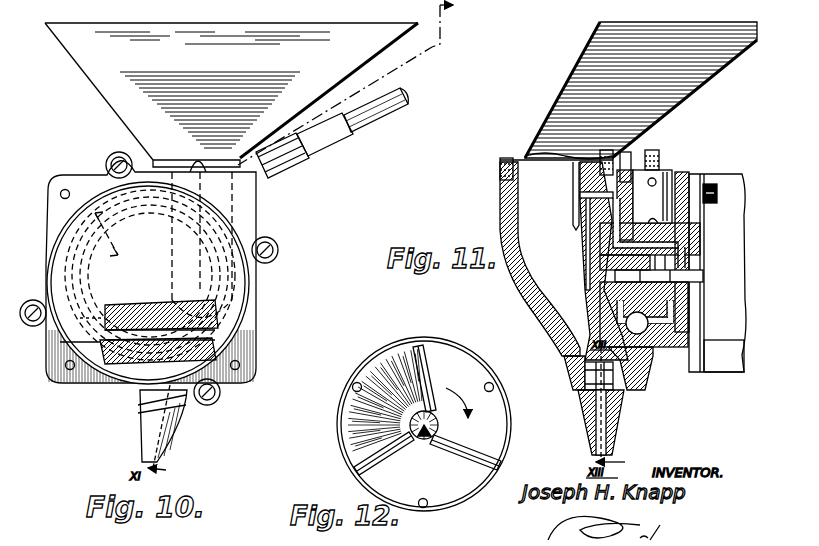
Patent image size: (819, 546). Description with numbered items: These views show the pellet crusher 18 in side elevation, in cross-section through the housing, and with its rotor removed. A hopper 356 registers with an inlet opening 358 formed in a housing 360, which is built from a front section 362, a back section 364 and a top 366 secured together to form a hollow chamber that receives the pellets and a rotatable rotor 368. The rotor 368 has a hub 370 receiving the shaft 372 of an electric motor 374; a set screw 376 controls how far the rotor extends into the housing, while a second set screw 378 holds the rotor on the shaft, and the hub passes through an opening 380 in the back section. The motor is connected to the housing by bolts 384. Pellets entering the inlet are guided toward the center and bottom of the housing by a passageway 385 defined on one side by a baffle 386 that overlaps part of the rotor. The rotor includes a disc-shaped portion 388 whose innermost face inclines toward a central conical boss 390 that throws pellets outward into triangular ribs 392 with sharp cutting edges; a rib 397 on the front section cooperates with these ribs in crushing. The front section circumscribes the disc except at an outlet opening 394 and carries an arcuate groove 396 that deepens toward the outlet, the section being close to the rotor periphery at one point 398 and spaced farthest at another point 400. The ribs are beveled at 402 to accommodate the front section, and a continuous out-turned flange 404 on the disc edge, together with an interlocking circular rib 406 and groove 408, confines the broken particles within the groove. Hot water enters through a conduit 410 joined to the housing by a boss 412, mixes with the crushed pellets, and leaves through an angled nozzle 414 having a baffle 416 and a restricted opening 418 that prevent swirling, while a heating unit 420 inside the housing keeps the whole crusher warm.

In FIG. 10, the crusher 18 is at (163, 236).
In FIG. 11, the crusher 18 is at (549, 183).
In FIG. 10, the hopper 356 is at (272, 33).
In FIG. 11, the hopper 356 is at (708, 55).
In FIG. 11, the inlet opening 358 is at (503, 186).
In FIG. 10, the housing 360 is at (170, 272).
In FIG. 11, the housing 360 is at (600, 328).
In FIG. 10, the front section 362 is at (47, 272).
In FIG. 11, the front section 362 is at (538, 290).
In FIG. 11, the back section 364 is at (640, 338).
In FIG. 11, the top 366 is at (612, 150).
In FIG. 11, the rotor 368 is at (600, 312).
In FIG. 12, the rotor 368 is at (416, 468).
In FIG. 11, the hub 370 is at (690, 290).
In FIG. 11, the shaft 372 is at (690, 279).
In FIG. 11, the electric motor 374 is at (732, 183).
In FIG. 11, the set screw 376 is at (595, 297).
In FIG. 11, the second set screw 378 is at (650, 209).
In FIG. 11, the opening 380 is at (680, 250).
In FIG. 11, the bolts 384 is at (725, 372).
In FIG. 11, the passageway 385 is at (600, 193).
In FIG. 10, the baffle 386 is at (190, 262).
In FIG. 11, the baffle 386 is at (580, 228).
In FIG. 11, the disc-shaped portion 388 is at (682, 174).
In FIG. 12, the disc-shaped portion 388 is at (447, 498).
In FIG. 11, the conical boss 390 is at (580, 262).
In FIG. 12, the conical boss 390 is at (419, 411).
In FIG. 11, the ribs 392 is at (540, 247).
In FIG. 12, the ribs 392 is at (387, 446).
In FIG. 11, the outlet opening 394 is at (583, 366).
In FIG. 10, the groove 396 is at (237, 303).
In FIG. 11, the groove 396 is at (600, 194).
In FIG. 10, the rib 397 is at (149, 319).
In FIG. 10, the point 398 is at (112, 380).
In FIG. 10, the point 400 is at (193, 388).
In FIG. 11, the beveled portion 402 is at (580, 197).
In FIG. 12, the beveled portion 402 is at (423, 347).
In FIG. 11, the out-turned flange 404 is at (633, 168).
In FIG. 12, the out-turned flange 404 is at (447, 348).
In FIG. 11, the circular rib 406 is at (640, 336).
In FIG. 11, the groove 408 is at (600, 244).
In FIG. 10, the conduit 410 is at (379, 128).
In FIG. 10, the boss 412 is at (255, 206).
In FIG. 10, the nozzle 414 is at (175, 430).
In FIG. 11, the nozzle 414 is at (620, 429).
In FIG. 11, the baffle 416 is at (588, 386).
In FIG. 11, the restricted opening 418 is at (592, 446).
In FIG. 10, the heating unit 420 is at (232, 342).
In FIG. 11, the heating unit 420 is at (640, 360).